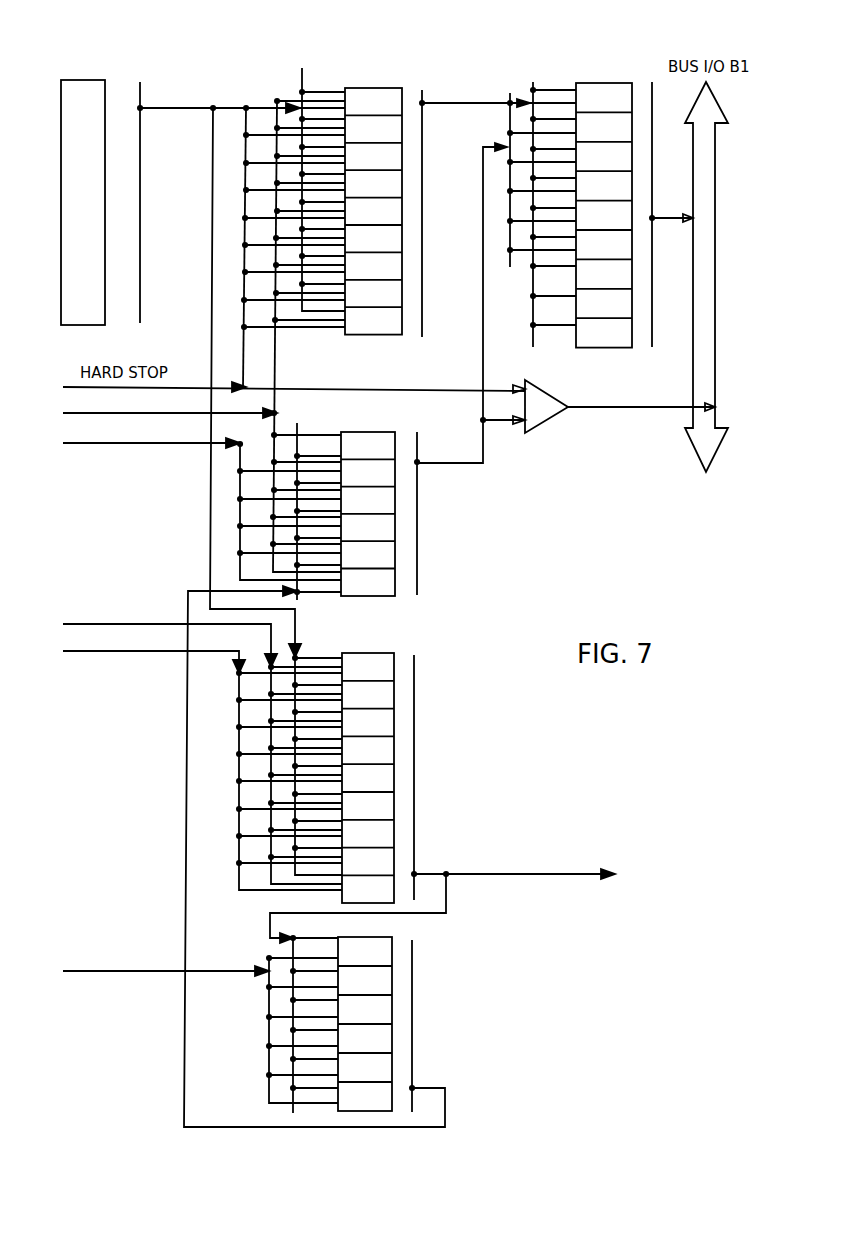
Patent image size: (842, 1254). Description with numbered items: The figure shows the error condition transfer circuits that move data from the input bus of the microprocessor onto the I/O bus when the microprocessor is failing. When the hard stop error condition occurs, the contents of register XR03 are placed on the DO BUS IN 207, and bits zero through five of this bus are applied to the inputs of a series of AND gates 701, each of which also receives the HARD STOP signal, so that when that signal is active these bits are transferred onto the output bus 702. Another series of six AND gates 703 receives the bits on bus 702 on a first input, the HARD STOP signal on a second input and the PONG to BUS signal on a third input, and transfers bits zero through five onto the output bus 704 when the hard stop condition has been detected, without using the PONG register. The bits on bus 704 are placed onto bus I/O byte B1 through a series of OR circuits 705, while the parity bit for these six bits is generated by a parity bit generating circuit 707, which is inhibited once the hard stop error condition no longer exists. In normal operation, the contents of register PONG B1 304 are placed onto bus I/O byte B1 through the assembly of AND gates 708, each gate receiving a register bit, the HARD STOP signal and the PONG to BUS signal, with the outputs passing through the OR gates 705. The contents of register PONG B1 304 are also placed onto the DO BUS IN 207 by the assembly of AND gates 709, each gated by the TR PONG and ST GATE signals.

The register PONG B1 304 is at (90, 79).
The assembly of AND gates 708 is at (380, 87).
The series of OR circuits 705 is at (610, 82).
The parity bit generating circuit 707 is at (547, 386).
The output bus 704 is at (483, 447).
The series of six AND gates 703 is at (378, 431).
The assembly of AND gates 709 is at (376, 652).
The DO BUS IN 207 is at (514, 866).
The series of AND gates 701 is at (254, 993).
The output bus 702 is at (447, 1108).